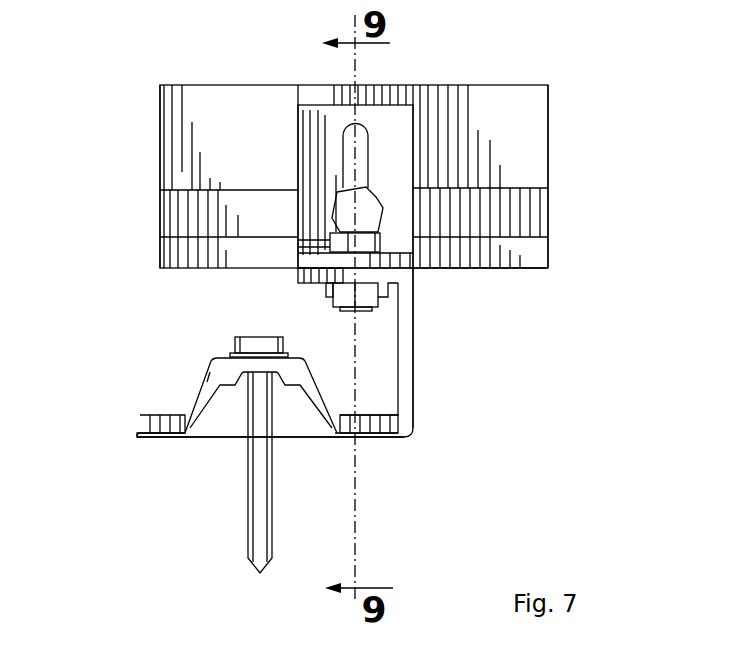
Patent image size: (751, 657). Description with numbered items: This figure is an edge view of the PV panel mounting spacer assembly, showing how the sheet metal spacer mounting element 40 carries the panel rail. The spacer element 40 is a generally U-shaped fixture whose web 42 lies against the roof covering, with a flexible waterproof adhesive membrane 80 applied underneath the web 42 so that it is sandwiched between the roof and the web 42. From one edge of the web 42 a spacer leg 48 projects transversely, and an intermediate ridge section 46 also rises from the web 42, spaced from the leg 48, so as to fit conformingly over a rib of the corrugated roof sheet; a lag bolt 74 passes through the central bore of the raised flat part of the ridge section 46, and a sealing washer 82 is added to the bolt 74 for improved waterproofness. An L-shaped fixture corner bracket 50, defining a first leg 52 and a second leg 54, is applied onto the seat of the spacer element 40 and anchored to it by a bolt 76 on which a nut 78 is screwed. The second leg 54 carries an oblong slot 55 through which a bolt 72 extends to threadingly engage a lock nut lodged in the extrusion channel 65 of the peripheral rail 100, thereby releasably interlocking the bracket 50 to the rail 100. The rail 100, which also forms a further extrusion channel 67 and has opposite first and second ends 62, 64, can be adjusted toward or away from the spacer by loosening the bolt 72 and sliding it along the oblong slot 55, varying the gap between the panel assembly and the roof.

The PV panel assembly peripheral rail 100 is at (705, 123).
The spacer mounting element 40 is at (430, 366).
The web 42 is at (140, 418).
The intermediate ridge section 46 is at (193, 388).
The spacer leg 48 is at (410, 340).
The L-shaped fixture corner bracket 50 is at (396, 120).
The first leg 52 is at (312, 263).
The second leg 54 is at (325, 135).
The oblong slot 55 is at (362, 150).
The first end 62 is at (160, 152).
The second end 64 is at (552, 92).
The extrusion channel 65 is at (566, 203).
The extrusion channel 67 is at (537, 220).
The bolt 72 is at (367, 195).
The bolt 74 is at (288, 490).
The bolt 76 is at (335, 298).
The nut 78 is at (372, 242).
The flexible waterproof adhesive membrane 80 is at (412, 432).
The sealing washer 82 is at (235, 352).